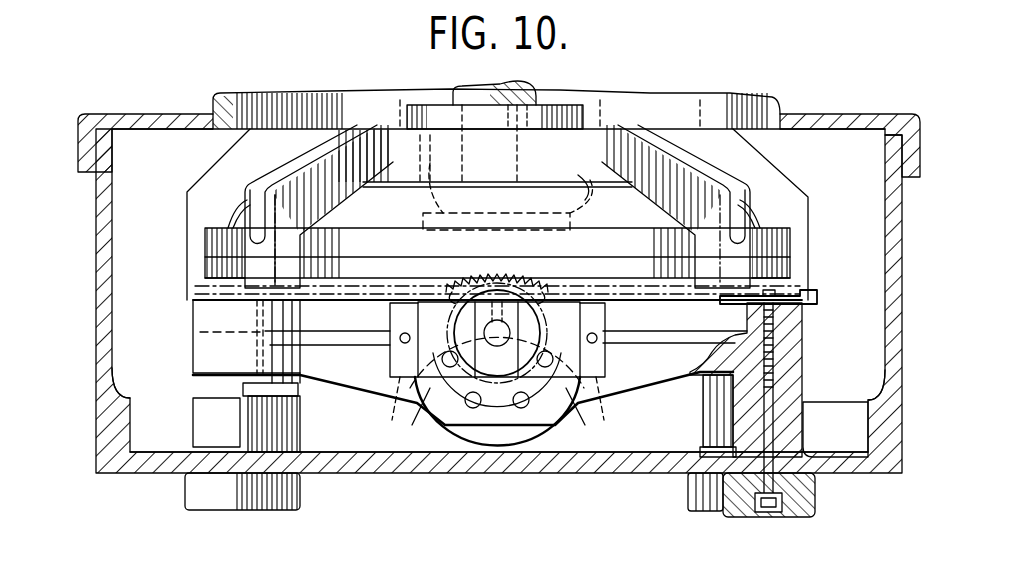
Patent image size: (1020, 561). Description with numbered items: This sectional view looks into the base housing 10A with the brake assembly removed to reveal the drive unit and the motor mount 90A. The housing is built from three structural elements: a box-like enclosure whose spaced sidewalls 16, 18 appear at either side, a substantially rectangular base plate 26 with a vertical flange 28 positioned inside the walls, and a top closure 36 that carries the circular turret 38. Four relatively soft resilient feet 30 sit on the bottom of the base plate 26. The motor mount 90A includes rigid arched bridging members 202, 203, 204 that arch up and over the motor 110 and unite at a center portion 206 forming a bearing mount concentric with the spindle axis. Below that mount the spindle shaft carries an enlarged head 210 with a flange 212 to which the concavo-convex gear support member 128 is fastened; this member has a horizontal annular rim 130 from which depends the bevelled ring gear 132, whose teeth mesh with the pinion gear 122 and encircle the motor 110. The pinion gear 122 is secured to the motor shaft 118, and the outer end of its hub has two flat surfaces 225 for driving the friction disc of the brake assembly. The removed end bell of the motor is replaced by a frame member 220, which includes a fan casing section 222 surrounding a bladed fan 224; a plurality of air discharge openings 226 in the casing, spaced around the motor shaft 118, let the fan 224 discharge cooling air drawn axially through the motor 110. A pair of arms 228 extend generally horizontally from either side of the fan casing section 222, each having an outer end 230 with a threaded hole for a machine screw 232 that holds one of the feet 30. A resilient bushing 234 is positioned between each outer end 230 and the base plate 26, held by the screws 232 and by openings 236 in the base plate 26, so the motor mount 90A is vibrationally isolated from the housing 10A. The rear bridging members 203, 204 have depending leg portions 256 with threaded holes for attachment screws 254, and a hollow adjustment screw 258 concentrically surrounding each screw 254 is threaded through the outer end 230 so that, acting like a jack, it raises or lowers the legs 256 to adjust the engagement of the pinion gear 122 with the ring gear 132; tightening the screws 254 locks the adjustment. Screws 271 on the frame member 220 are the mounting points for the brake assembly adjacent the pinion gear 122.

The base housing 10A is at (880, 95).
The sidewall 16 is at (96, 318).
The sidewall 18 is at (903, 262).
The base plate 26 is at (478, 472).
The vertical flange 28 is at (120, 390).
The feet 30 is at (300, 502).
The top closure 36 is at (808, 116).
The circular turret 38 is at (210, 92).
The motor mount 90A is at (158, 208).
The motor 110 is at (598, 400).
The motor shaft 118 is at (490, 333).
The pinion gear 122 is at (497, 261).
The gear support member 128 is at (609, 200).
The horizontal annular rim 130 is at (790, 245).
The bevelled ring gear 132 is at (793, 270).
The bridging member 202 is at (780, 184).
The bridging member 203 is at (228, 165).
The bridging member 204 is at (692, 189).
The center portion 206 is at (515, 165).
The enlarged head 210 is at (482, 146).
The flange 212 is at (513, 181).
The frame member 220 is at (418, 410).
The fan casing section 222 is at (553, 410).
The bladed fan 224 is at (450, 385).
The flat surfaces 225 is at (497, 309).
The air discharge openings 226 is at (603, 319).
The arms 228 is at (362, 388).
The outer end 230 is at (200, 346).
The machine screw 232 is at (770, 400).
The resilient bushing 234 is at (273, 423).
The openings 236 is at (815, 500).
The machine screws 254 is at (282, 258).
The depending leg portions 256 is at (205, 262).
The adjustment screw 258 is at (200, 332).
The screws 271 is at (405, 343).